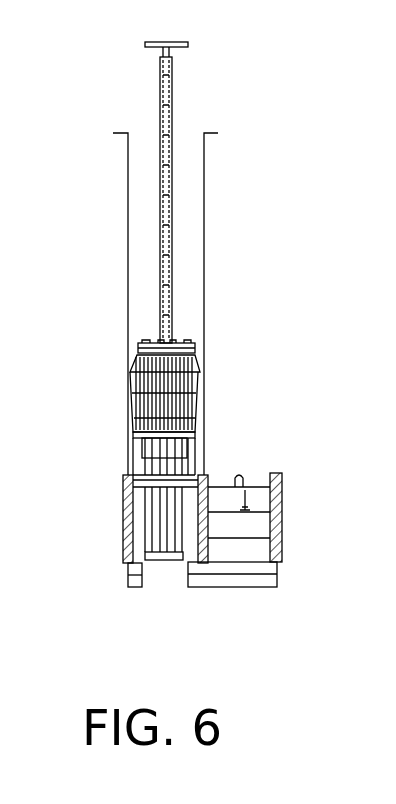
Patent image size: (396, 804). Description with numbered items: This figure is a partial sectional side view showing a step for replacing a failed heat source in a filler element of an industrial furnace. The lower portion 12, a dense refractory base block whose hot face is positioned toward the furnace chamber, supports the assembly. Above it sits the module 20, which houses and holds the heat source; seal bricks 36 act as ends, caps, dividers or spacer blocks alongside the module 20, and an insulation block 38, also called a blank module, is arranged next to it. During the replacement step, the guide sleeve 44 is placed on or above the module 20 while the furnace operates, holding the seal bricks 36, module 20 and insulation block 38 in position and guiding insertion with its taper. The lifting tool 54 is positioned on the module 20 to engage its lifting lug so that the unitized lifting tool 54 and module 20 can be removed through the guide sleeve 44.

The lifting tool 54 is at (162, 100).
The guide sleeve 44 is at (130, 377).
The module 20 is at (137, 427).
The seal brick 36 is at (125, 480).
The insulation block 38 is at (244, 487).
The lower portion 12 is at (263, 587).